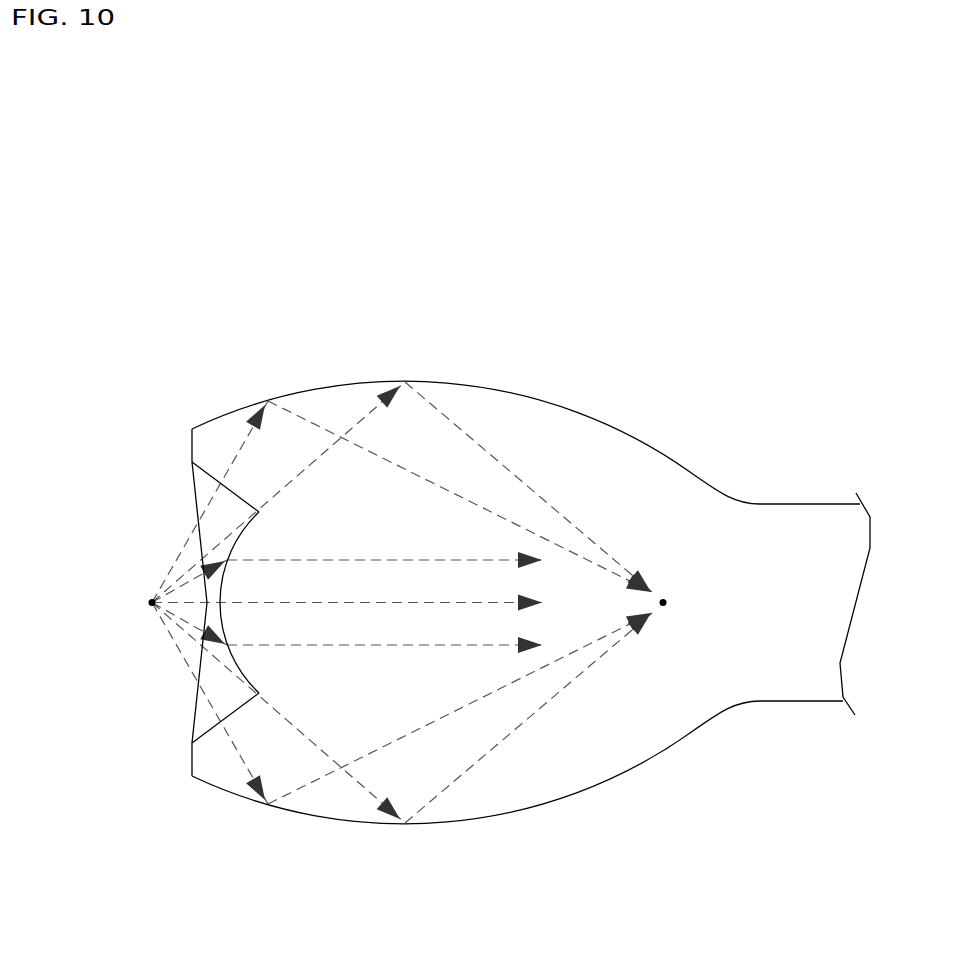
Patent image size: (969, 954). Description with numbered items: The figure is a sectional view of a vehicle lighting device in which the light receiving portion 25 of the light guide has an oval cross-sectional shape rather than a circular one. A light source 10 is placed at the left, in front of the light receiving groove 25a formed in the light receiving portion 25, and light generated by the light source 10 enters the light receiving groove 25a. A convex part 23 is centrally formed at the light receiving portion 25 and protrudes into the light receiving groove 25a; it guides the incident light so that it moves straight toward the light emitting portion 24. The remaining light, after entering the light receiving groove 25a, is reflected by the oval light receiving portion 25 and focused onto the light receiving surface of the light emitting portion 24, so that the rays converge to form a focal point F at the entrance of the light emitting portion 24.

The light source 10 is at (150, 601).
The convex part 23 is at (246, 626).
The light emitting portion 24 is at (805, 528).
The light receiving portion 25 is at (478, 388).
The light receiving groove 25a is at (221, 533).
The focal point F is at (668, 607).